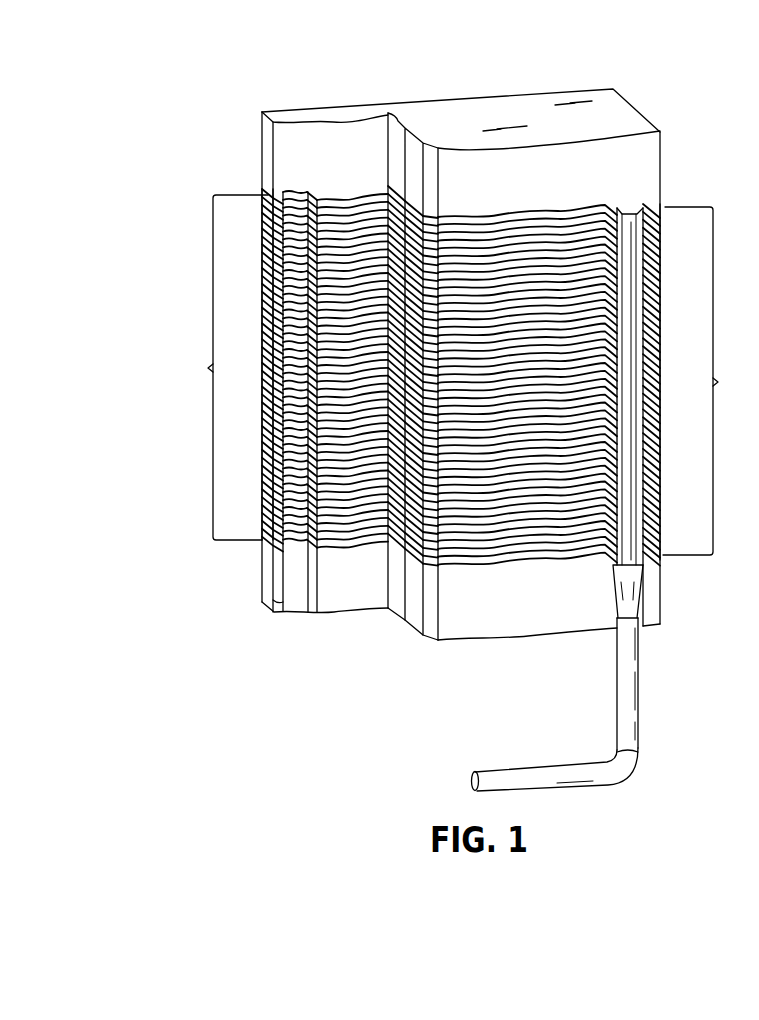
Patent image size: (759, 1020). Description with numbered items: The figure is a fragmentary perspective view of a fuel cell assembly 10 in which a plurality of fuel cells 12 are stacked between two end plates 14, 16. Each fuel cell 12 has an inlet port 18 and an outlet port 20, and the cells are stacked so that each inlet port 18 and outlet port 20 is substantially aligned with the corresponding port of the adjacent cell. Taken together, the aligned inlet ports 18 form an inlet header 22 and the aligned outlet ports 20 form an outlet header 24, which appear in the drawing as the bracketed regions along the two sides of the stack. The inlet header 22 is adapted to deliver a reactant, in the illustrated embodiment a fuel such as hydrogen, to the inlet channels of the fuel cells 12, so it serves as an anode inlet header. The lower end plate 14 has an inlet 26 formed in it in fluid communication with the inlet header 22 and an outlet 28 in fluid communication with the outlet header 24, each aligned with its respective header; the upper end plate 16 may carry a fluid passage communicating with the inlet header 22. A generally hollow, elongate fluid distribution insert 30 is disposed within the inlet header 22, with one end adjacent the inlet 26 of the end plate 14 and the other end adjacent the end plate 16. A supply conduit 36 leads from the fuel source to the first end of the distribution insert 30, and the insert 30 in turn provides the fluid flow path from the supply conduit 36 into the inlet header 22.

The fuel cell assembly 10 is at (655, 96).
The fuel cells 12 is at (553, 231).
The end plate 14 is at (267, 580).
The end plate 16 is at (266, 157).
The inlet port 18 is at (648, 415).
The outlet port 20 is at (280, 403).
The inlet header 22 is at (704, 381).
The outlet header 24 is at (223, 367).
The inlet 26 is at (642, 623).
The outlet 28 is at (284, 597).
The fluid distribution insert 30 is at (637, 209).
The supply conduit 36 is at (631, 723).